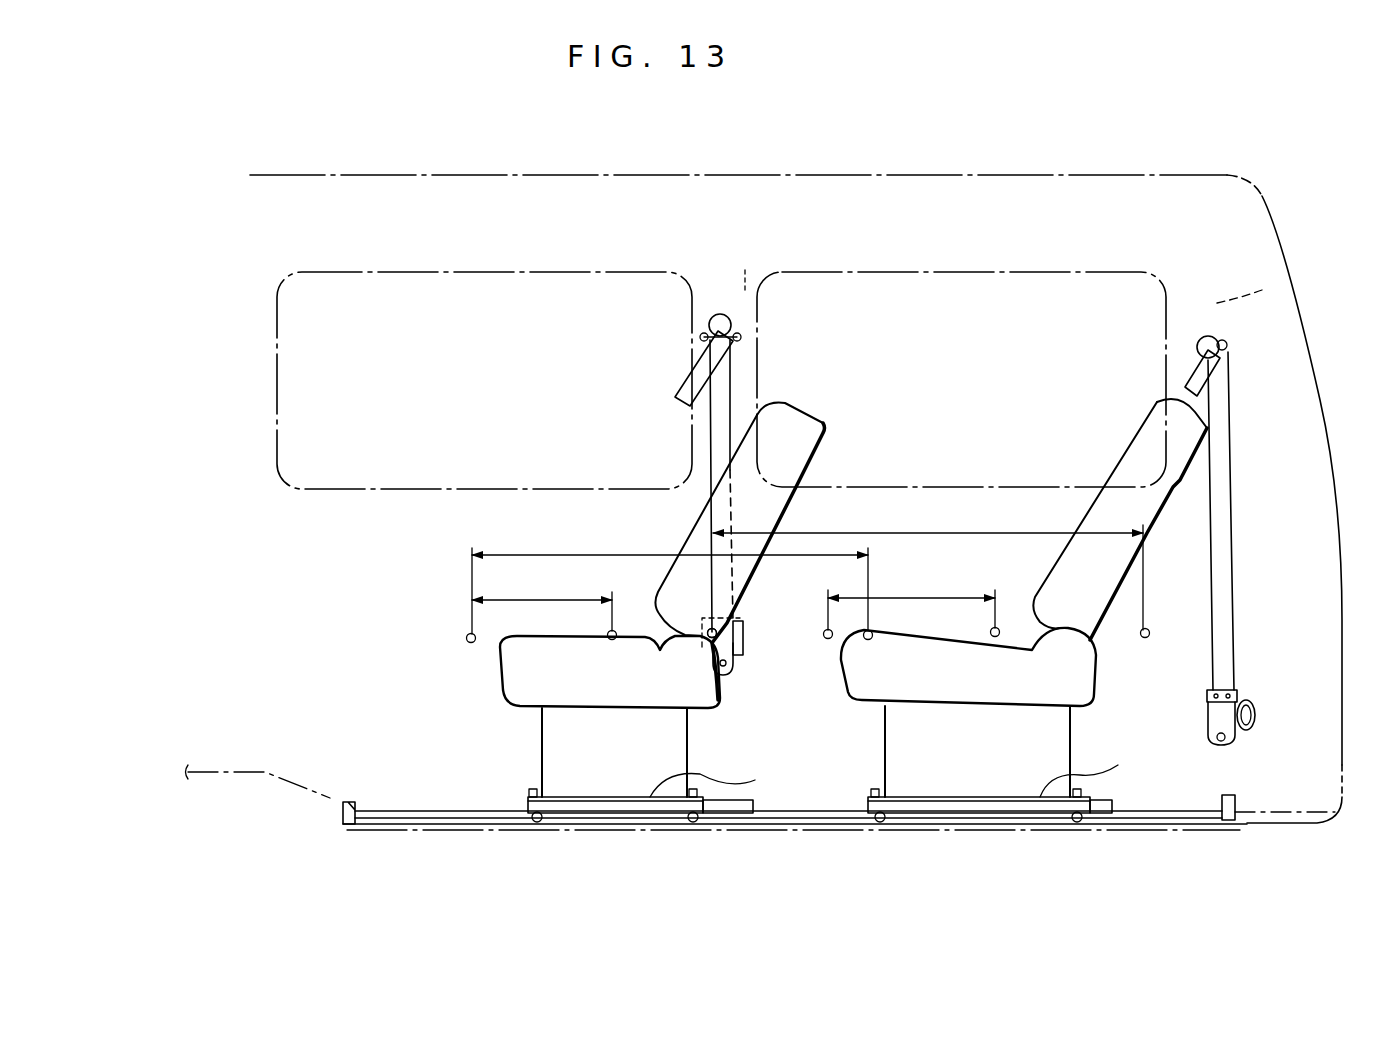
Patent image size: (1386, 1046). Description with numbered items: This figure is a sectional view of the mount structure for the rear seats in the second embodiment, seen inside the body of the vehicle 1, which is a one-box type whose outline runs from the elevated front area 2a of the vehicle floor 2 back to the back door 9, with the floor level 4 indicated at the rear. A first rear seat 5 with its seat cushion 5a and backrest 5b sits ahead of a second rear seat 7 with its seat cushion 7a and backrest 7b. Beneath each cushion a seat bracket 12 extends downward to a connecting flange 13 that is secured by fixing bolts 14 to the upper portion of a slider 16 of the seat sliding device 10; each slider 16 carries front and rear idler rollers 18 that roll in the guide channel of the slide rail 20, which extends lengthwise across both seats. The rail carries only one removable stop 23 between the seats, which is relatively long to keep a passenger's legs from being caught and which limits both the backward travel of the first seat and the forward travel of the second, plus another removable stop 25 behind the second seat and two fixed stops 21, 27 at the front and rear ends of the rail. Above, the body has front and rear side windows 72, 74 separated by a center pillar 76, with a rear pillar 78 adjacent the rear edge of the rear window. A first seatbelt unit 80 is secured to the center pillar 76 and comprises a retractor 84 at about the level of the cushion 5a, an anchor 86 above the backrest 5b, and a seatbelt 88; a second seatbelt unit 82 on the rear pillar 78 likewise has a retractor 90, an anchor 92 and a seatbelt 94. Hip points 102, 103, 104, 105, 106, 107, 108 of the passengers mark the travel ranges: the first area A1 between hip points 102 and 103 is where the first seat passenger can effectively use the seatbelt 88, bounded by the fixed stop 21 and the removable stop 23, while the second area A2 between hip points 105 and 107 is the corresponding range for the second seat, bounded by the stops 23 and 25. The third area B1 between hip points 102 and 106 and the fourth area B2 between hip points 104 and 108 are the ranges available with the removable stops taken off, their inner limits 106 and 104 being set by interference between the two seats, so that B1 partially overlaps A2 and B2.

The vehicle 1 is at (1260, 152).
The vehicle floor 2 is at (1263, 823).
The front area of vehicle floor 2a is at (275, 770).
The floor level 4 is at (1295, 812).
The first rear seat 5 is at (690, 574).
The seat cushion 5a is at (708, 696).
The backrest 5b is at (815, 448).
The second rear seat 7 is at (1024, 558).
The seat cushion 7a is at (1097, 690).
The backrest 7b is at (1120, 447).
The back door 9 is at (1328, 463).
The seat sliding device 10 is at (500, 800).
The seat bracket 12 is at (670, 748).
The connecting flange 13 is at (899, 770).
The fixing bolt 14 is at (532, 789).
The slider 16 is at (622, 805).
The idler roller 18 is at (537, 822).
The slide rail 20 is at (440, 818).
The fixed stop 21 is at (350, 825).
The removable stop 23 is at (713, 812).
The removable stop 25 is at (1100, 812).
The fixed stop 27 is at (1228, 820).
The front side window 72 is at (527, 272).
The rear side window 74 is at (965, 272).
The center pillar 76 is at (745, 270).
The rear pillar 78 is at (1262, 290).
The first seatbelt unit 80 is at (742, 392).
The second seatbelt unit 82 is at (1242, 410).
The retractor 84 is at (745, 637).
The anchor 86 is at (728, 330).
The seatbelt 88 is at (690, 376).
The retractor 90 is at (1250, 695).
The anchor 92 is at (1222, 345).
The seatbelt 94 is at (1195, 385).
The hip point 102 is at (471, 643).
The hip point 103 is at (612, 630).
The hip point 104 is at (707, 640).
The hip point 105 is at (828, 639).
The hip point 106 is at (868, 640).
The hip point 107 is at (995, 637).
The hip point 108 is at (1145, 638).
The first area A1 is at (542, 598).
The second area A2 is at (911, 597).
The third area B1 is at (670, 576).
The fourth area B2 is at (928, 563).